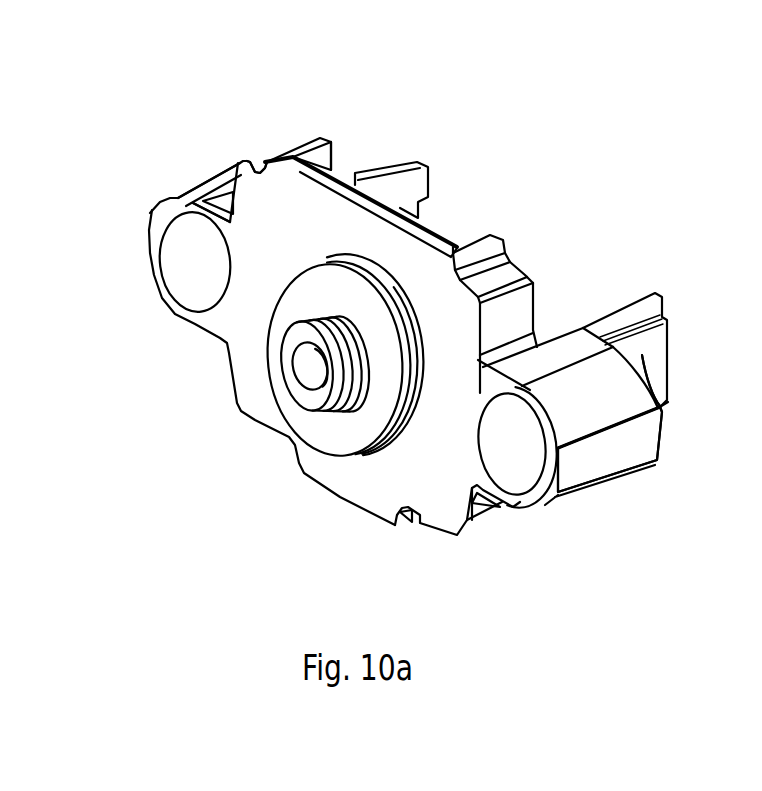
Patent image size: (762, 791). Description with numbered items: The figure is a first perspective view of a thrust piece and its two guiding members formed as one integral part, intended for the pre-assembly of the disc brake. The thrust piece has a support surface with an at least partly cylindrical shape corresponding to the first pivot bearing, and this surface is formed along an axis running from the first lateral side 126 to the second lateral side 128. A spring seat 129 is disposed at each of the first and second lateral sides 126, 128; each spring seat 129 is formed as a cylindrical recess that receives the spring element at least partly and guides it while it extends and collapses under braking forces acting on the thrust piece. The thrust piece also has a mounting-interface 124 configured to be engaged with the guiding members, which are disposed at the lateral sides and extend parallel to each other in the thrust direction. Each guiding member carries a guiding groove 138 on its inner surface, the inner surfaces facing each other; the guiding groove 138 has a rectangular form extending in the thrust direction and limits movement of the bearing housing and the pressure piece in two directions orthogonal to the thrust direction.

The mounting-interface 124 is at (607, 452).
The first lateral side 126 is at (217, 182).
The second lateral side 128 is at (672, 361).
The spring seat 129 is at (173, 257).
The guiding groove 138 is at (397, 190).